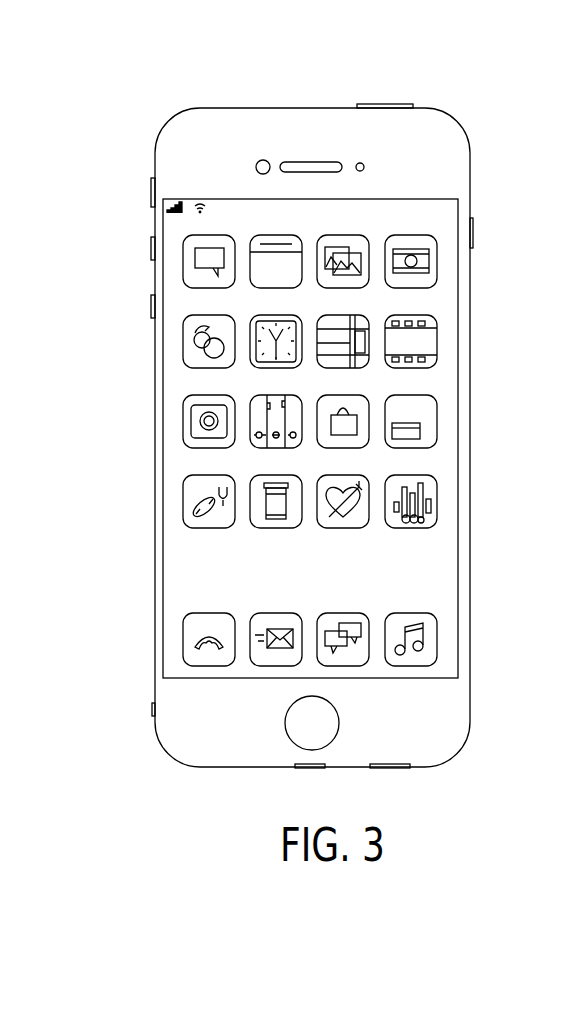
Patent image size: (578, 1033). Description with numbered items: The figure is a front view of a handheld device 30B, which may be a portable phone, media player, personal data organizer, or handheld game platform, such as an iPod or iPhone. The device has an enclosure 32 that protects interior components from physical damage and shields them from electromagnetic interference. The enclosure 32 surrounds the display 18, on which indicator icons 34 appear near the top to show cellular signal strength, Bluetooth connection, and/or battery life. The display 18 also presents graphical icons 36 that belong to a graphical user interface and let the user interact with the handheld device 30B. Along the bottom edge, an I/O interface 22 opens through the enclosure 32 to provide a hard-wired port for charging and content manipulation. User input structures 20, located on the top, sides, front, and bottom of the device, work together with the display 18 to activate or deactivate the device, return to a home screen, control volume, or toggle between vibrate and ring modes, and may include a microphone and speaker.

The handheld device 30B is at (138, 95).
The enclosure 32 is at (470, 186).
The input structures 20 is at (384, 104).
The I/O interface 22 is at (310, 769).
The display 18 is at (459, 549).
The indicator icons 34 is at (200, 201).
The graphical icons 36 is at (440, 410).